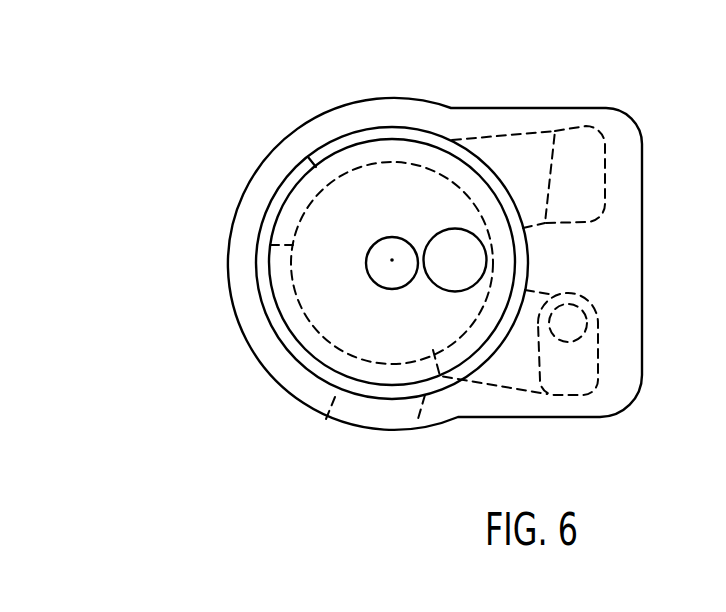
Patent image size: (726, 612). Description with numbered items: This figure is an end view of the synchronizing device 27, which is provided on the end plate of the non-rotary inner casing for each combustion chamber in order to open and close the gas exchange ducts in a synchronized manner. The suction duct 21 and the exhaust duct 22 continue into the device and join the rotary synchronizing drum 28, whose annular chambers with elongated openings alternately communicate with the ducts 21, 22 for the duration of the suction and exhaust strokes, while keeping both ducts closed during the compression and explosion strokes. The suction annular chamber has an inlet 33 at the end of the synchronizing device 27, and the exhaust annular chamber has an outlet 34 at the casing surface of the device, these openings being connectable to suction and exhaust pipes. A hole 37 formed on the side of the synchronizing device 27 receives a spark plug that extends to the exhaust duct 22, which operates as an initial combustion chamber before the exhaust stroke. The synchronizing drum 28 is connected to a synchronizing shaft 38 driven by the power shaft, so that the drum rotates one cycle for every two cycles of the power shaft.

The suction duct 21 is at (585, 168).
The exhaust duct 22 is at (573, 377).
The synchronizing device 27 is at (212, 331).
The synchronizing drum 28 is at (283, 193).
The inlet 33 is at (458, 250).
The outlet 34 is at (372, 423).
The hole 37 is at (573, 325).
The synchronizing shaft 38 is at (380, 259).